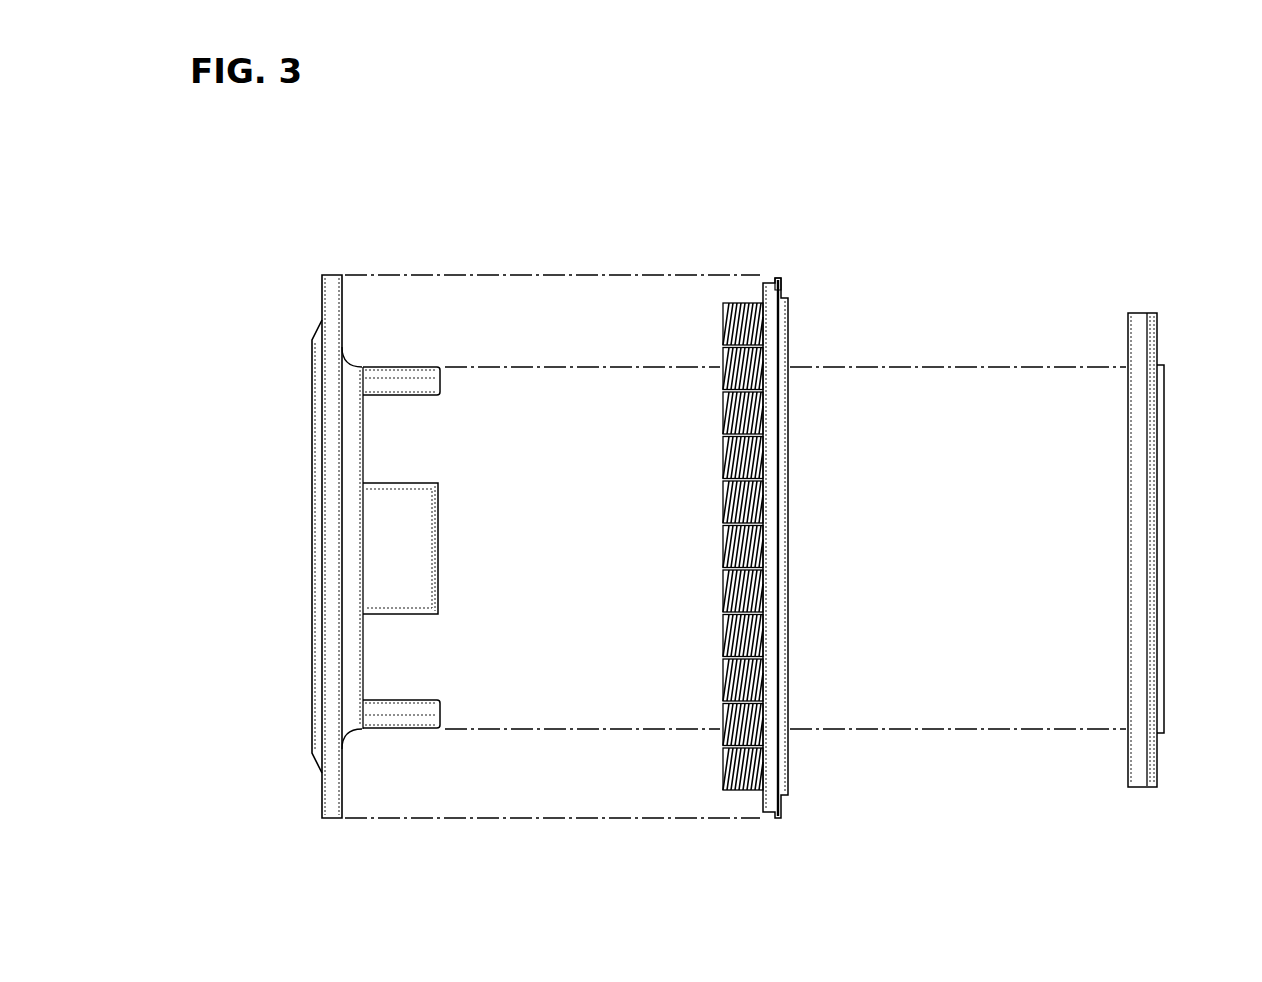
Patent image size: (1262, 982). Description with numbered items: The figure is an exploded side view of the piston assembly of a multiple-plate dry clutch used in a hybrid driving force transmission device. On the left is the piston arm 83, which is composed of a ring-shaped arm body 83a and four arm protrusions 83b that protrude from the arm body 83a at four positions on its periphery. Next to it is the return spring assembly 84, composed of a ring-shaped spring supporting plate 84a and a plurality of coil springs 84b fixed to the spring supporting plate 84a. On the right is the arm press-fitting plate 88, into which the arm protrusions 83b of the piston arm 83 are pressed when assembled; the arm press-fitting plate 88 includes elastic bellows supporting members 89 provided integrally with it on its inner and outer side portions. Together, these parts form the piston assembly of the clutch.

The piston arm 83 is at (303, 375).
The arm body 83a is at (335, 506).
The arm protrusions 83b is at (412, 386).
The return spring assembly 84 is at (791, 305).
The spring supporting plate 84a is at (781, 286).
The coil springs 84b is at (722, 556).
The arm press-fitting plate 88 is at (1166, 430).
The elastic bellows supporting members 89 is at (1140, 428).